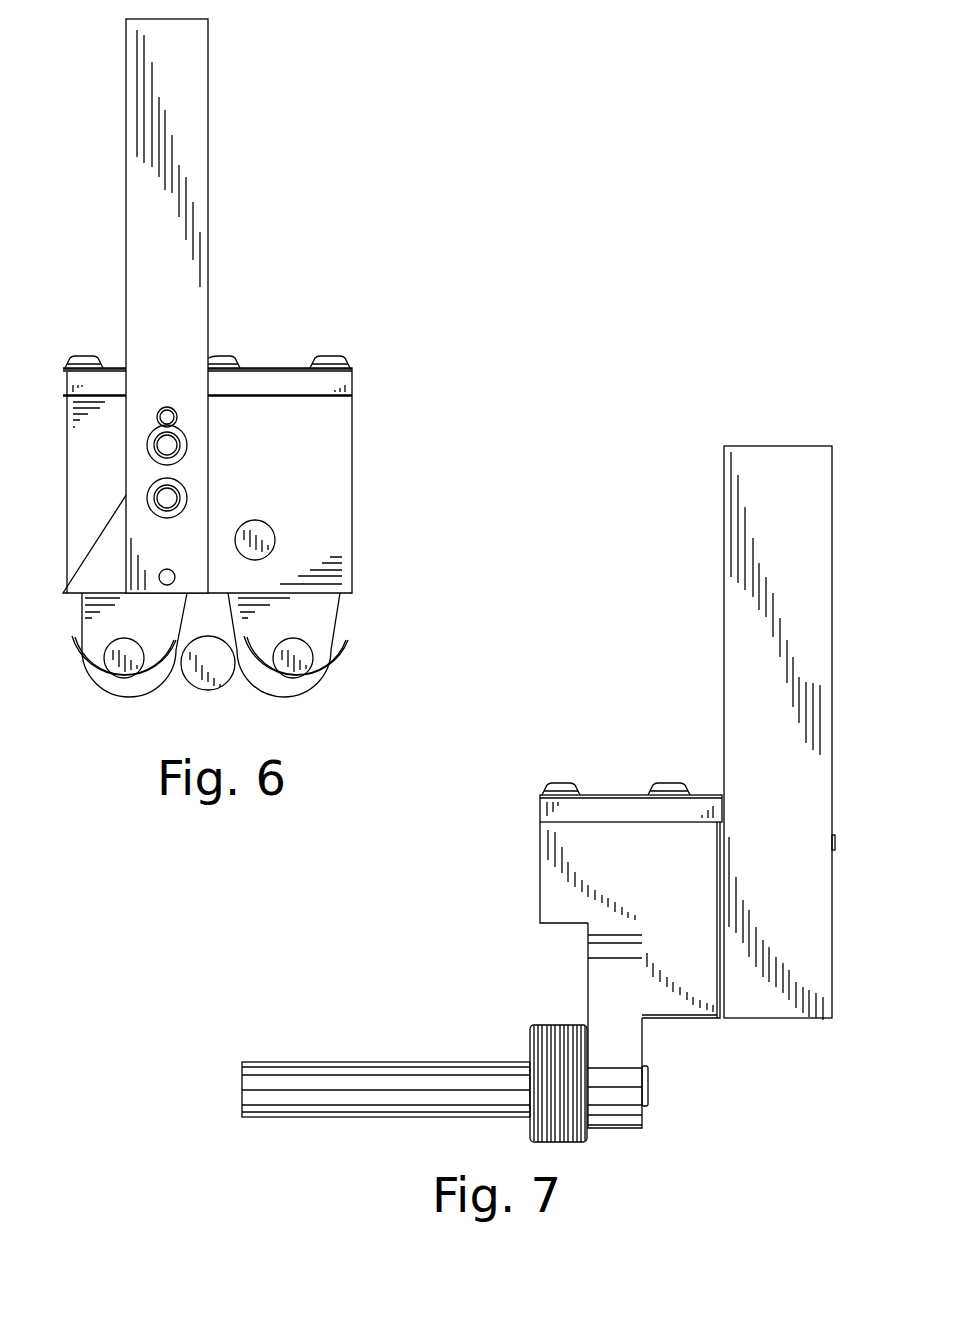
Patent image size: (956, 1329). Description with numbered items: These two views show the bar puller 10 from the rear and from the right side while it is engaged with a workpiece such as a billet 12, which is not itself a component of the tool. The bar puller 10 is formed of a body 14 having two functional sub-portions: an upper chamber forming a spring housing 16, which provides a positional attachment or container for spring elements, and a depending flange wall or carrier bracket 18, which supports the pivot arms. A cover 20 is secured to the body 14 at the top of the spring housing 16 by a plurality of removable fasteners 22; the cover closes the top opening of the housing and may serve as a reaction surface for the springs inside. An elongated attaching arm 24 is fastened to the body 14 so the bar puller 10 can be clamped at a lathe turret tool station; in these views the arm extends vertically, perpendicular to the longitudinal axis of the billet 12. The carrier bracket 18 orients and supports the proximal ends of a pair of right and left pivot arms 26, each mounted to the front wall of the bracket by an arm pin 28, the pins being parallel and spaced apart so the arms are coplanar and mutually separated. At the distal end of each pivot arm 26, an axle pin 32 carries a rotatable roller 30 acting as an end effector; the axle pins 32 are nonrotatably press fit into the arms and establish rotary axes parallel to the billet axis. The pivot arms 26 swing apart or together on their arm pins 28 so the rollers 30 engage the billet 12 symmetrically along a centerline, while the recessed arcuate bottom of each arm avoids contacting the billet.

In FIG. 6, the bar puller 10 is at (286, 262).
In FIG. 7, the bar puller 10 is at (563, 730).
In FIG. 6, the billet 12 is at (213, 690).
In FIG. 7, the billet 12 is at (410, 1065).
In FIG. 6, the body 14 is at (70, 469).
In FIG. 7, the spring housing 16 is at (545, 875).
In FIG. 7, the carrier bracket 18 is at (692, 1015).
In FIG. 6, the cover 20 is at (240, 368).
In FIG. 7, the cover 20 is at (603, 802).
In FIG. 6, the removable fasteners 22 is at (330, 358).
In FIG. 7, the removable fasteners 22 is at (558, 783).
In FIG. 6, the attaching arm 24 is at (197, 152).
In FIG. 7, the attaching arm 24 is at (725, 637).
In FIG. 6, the pivot arms 26 is at (82, 608).
In FIG. 7, the pivot arms 26 is at (592, 985).
In FIG. 6, the arm pin 28 is at (266, 526).
In FIG. 6, the roller 30 is at (83, 695).
In FIG. 7, the roller 30 is at (545, 1023).
In FIG. 6, the axle pin 32 is at (123, 677).
In FIG. 7, the axle pin 32 is at (648, 1085).